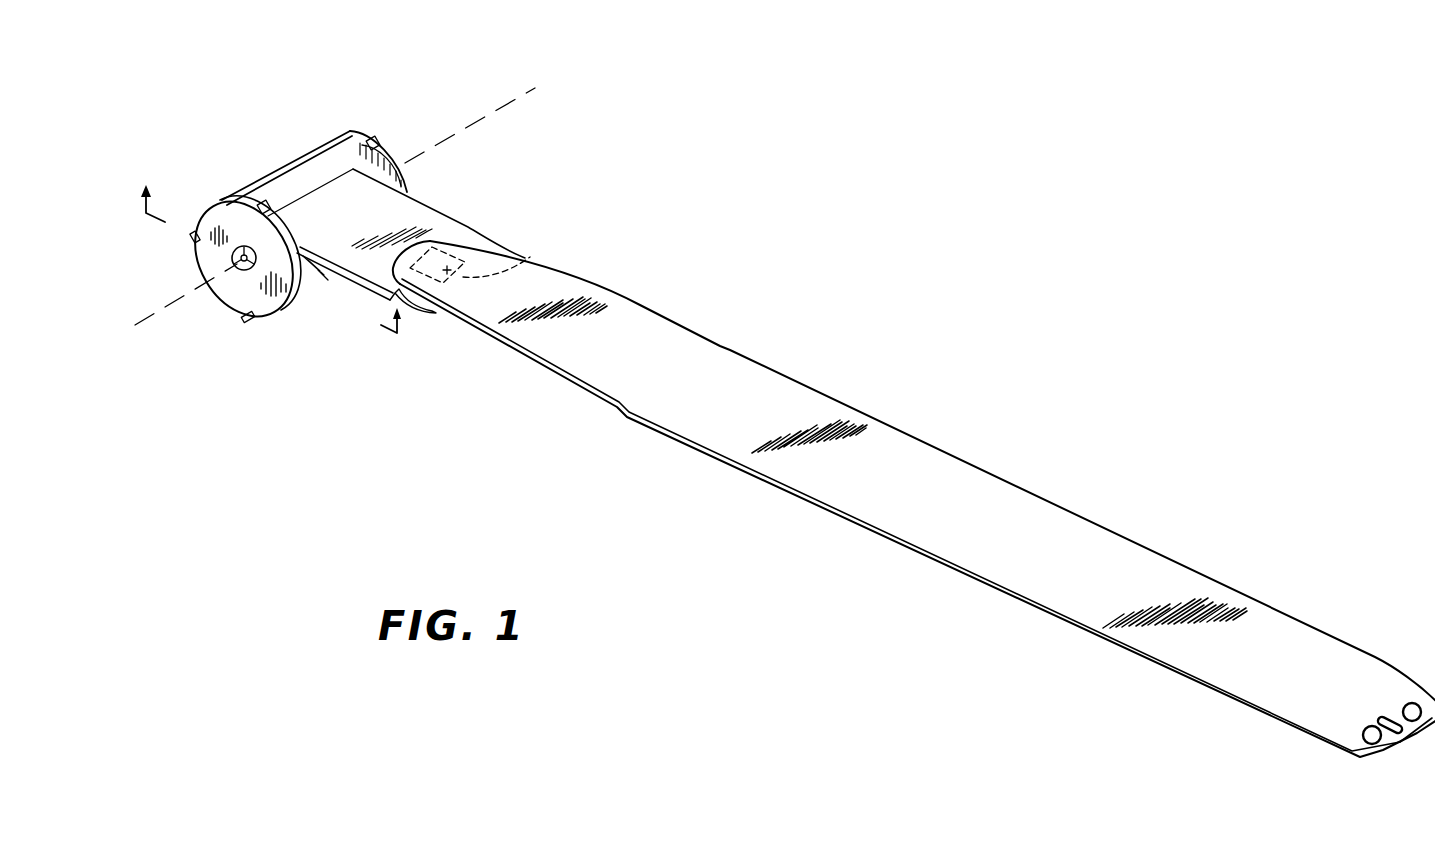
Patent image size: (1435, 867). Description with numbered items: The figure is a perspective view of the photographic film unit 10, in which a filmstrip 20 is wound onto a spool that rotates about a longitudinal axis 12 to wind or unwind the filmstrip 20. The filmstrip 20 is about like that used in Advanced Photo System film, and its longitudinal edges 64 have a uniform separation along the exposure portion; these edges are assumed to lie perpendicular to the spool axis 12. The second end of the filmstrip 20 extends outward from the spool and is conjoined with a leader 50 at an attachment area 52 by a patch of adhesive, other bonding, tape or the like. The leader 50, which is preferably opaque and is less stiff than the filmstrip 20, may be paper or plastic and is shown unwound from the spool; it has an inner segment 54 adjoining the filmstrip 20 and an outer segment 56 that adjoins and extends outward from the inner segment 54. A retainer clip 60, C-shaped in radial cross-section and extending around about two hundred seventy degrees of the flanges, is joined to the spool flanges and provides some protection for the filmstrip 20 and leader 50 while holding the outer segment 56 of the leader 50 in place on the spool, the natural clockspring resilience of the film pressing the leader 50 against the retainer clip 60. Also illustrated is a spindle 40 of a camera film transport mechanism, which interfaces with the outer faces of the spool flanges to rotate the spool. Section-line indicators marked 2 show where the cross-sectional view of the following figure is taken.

The photographic film unit 10 is at (252, 146).
The longitudinal axis 12 is at (486, 119).
The filmstrip 20 is at (410, 213).
The spindle 40 is at (241, 267).
The leader 50 is at (974, 432).
The attachment area 52 is at (521, 261).
The inner segment 54 is at (621, 357).
The outer segment 56 is at (923, 507).
The retainer clip 60 is at (344, 146).
The longitudinal edges 64 is at (470, 223).
The section line of FIG. 2 is at (274, 278).